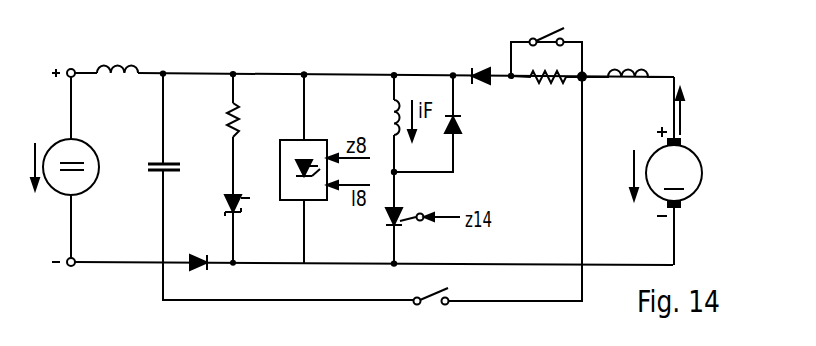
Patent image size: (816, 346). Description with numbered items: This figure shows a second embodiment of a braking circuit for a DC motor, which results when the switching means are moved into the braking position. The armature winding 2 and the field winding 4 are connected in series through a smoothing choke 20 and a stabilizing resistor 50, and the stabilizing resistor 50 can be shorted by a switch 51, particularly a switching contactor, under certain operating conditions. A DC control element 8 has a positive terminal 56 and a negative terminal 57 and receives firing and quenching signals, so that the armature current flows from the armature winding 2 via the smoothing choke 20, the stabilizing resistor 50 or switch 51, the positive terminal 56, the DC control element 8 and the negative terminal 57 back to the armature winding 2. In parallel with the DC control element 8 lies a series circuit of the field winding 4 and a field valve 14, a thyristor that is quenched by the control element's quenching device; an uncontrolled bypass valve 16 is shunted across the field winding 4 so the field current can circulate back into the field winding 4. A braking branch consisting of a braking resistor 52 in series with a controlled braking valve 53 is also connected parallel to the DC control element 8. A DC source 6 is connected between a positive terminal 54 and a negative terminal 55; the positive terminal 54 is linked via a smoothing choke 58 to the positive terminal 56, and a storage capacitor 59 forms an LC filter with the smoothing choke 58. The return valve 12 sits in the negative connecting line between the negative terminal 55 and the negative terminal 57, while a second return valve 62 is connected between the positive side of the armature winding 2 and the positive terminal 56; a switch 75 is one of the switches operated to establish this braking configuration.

The armature winding 2 is at (695, 190).
The field winding 4 is at (389, 118).
The DC source 6 is at (93, 149).
The DC control element 8 is at (280, 158).
The return valve 12 is at (196, 268).
The field valve 14 is at (387, 217).
The bypass valve 16 is at (462, 128).
The smoothing choke 20 is at (646, 52).
The stabilizing resistor 50 is at (536, 83).
The switch 51 is at (557, 37).
The braking resistor 52 is at (228, 112).
The braking valve 53 is at (226, 206).
The positive terminal 54 is at (67, 58).
The negative terminal 55 is at (67, 278).
The positive terminal 56 is at (304, 74).
The negative terminal 57 is at (304, 263).
The smoothing choke 58 is at (137, 69).
The storage capacitor 59 is at (161, 173).
The second return valve 62 is at (493, 57).
The switch 75 is at (428, 305).